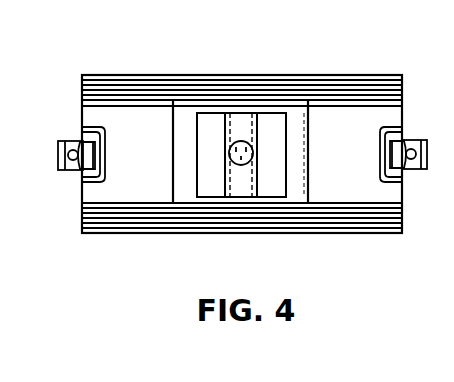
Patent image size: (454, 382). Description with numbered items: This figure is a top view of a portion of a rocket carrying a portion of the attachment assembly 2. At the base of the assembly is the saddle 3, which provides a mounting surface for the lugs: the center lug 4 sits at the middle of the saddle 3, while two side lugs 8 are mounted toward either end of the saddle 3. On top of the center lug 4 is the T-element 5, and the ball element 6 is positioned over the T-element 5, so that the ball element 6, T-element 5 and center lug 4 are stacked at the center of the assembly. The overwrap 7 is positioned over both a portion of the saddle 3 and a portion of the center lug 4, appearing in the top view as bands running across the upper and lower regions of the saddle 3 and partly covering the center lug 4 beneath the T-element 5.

The attachment assembly 2 is at (286, 73).
The saddle 3 is at (122, 117).
The center lug 4 is at (297, 133).
The T-element 5 is at (239, 125).
The ball element 6 is at (241, 167).
The overwrap 7 is at (352, 220).
The side lugs 8 is at (66, 140).